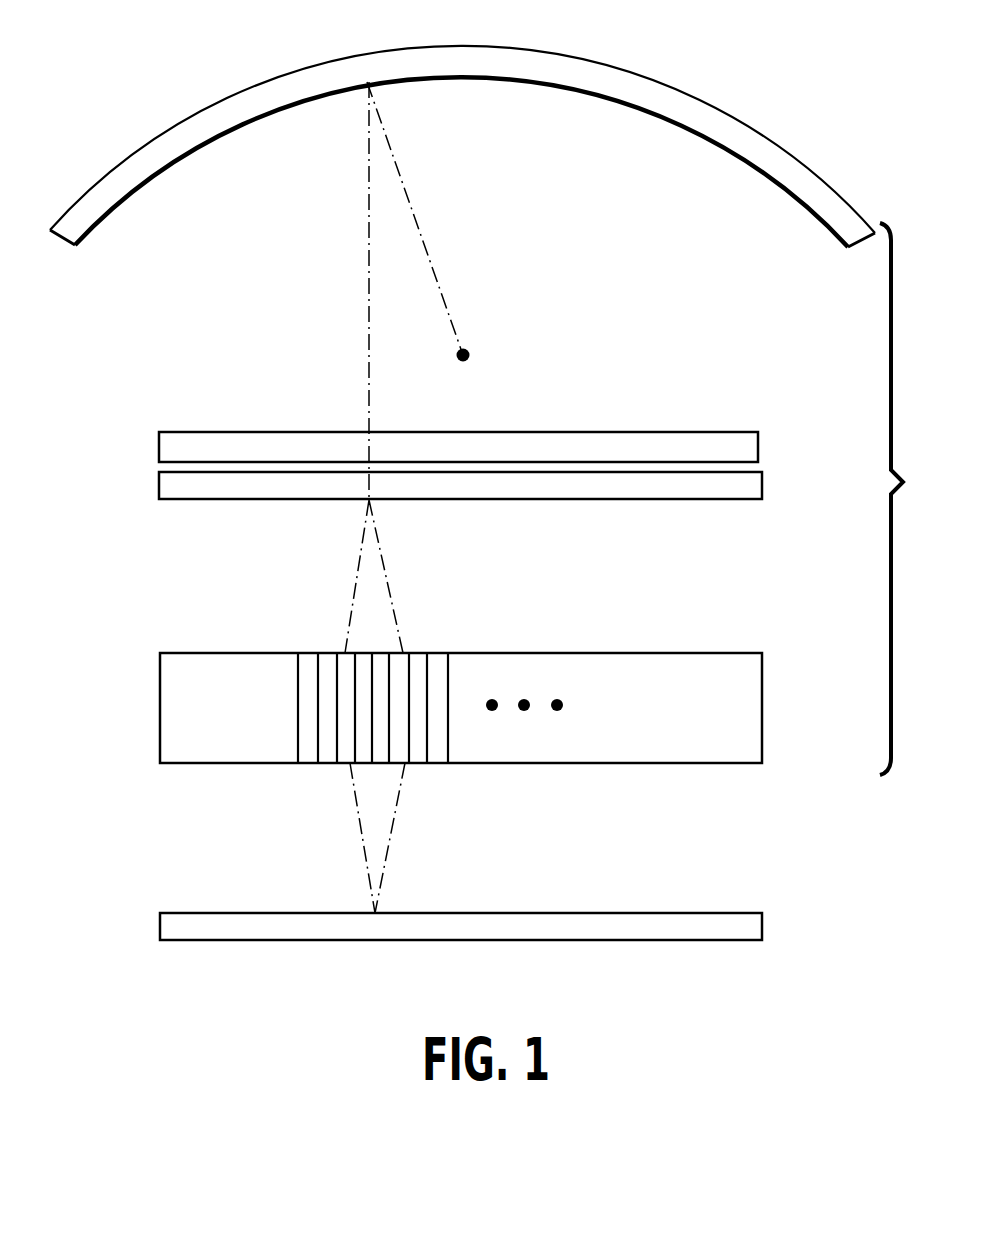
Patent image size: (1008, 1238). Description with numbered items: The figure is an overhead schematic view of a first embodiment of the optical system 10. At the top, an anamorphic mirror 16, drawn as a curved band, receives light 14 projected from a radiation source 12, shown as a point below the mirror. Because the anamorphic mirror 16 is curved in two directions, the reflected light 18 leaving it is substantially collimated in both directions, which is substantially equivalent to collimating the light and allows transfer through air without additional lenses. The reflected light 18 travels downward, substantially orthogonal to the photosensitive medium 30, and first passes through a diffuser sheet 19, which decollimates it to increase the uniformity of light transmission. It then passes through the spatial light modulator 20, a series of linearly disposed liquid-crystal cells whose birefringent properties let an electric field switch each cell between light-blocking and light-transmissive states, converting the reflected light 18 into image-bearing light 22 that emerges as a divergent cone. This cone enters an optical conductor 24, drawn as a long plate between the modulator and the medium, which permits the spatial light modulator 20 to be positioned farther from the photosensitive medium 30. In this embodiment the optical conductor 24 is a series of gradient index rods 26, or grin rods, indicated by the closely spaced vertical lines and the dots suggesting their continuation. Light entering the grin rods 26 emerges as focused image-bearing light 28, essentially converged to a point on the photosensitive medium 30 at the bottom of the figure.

The optical system 10 is at (909, 499).
The radiation source 12 is at (470, 355).
The light 14 is at (437, 272).
The anamorphic mirror 16 is at (626, 70).
The reflected light 18 is at (370, 315).
The diffuser sheet 19 is at (172, 450).
The spatial light modulator 20 is at (168, 488).
The image-bearing light 22 is at (404, 577).
The optical conductor 24 is at (166, 675).
The gradient index rods 26 is at (327, 660).
The focused image-bearing light 28 is at (412, 832).
The photosensitive medium 30 is at (207, 928).